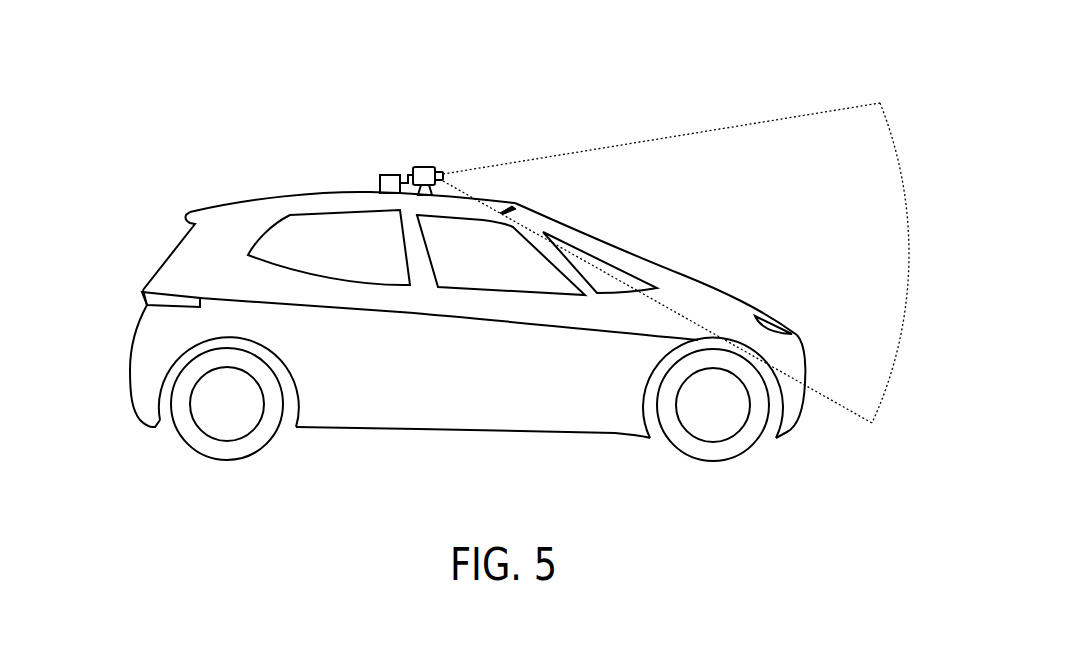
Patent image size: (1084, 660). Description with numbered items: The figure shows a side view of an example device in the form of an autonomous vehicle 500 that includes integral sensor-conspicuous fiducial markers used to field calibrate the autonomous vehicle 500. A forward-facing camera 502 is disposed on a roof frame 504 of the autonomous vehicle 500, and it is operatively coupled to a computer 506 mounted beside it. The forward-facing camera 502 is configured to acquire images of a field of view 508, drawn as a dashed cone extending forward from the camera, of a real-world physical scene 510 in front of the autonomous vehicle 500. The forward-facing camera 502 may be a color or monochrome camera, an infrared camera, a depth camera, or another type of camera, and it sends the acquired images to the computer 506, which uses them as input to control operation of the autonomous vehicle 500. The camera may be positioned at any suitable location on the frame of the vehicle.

The autonomous vehicle 500 is at (318, 100).
The forward-facing camera 502 is at (425, 167).
The roof frame 504 is at (253, 198).
The computer 506 is at (390, 175).
The field of view 508 is at (683, 135).
The real-world physical scene 510 is at (823, 218).